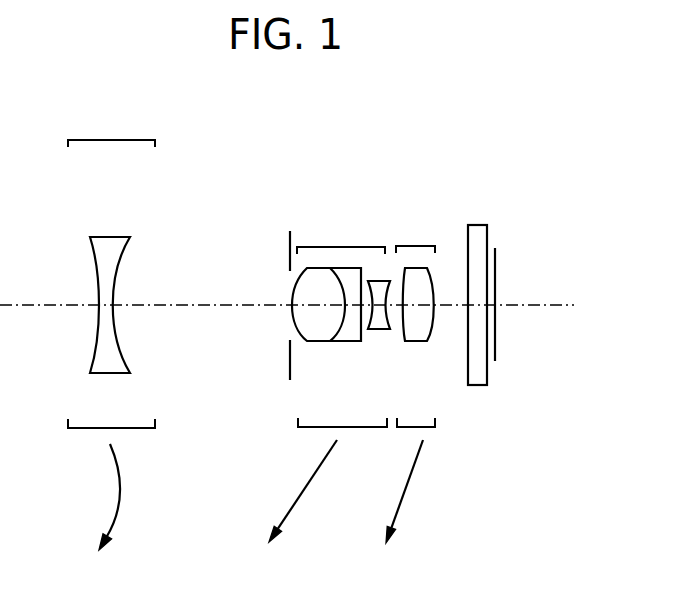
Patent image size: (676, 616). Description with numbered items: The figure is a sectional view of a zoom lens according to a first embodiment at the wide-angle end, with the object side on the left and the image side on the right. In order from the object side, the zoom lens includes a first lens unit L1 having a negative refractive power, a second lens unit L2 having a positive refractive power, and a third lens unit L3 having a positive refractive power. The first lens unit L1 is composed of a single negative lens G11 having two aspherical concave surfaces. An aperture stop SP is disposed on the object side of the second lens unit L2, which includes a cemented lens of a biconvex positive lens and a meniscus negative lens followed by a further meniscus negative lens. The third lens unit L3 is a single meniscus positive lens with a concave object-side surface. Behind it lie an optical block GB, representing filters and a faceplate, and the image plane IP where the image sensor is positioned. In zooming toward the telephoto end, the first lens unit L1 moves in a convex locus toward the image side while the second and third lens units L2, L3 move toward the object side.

The first lens unit L1 is at (111, 326).
The negative lens G11 is at (112, 238).
The aperture stop SP is at (290, 238).
The second lens unit L2 is at (329, 378).
The third lens unit L3 is at (410, 378).
The optical block GB is at (478, 225).
The image plane IP is at (495, 266).